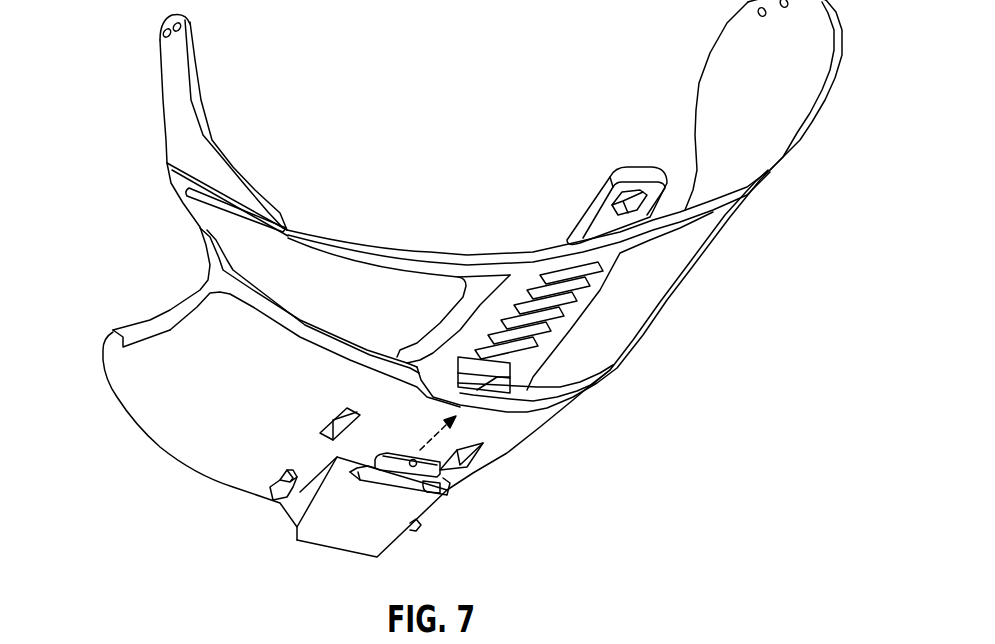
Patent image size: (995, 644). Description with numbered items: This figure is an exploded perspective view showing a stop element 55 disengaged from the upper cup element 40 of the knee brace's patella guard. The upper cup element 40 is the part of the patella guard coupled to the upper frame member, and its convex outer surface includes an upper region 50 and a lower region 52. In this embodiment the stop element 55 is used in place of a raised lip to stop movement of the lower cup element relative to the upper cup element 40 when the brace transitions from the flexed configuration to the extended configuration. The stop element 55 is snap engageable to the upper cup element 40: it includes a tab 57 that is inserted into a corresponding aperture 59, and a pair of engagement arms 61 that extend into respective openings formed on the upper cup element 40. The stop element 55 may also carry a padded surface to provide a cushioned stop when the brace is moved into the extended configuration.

The upper cup element 40 is at (457, 302).
The upper region 50 is at (506, 217).
The lower region 52 is at (160, 428).
The stop element 55 is at (350, 538).
The tab 57 is at (397, 455).
The aperture 59 is at (540, 380).
The engagement arms 61 is at (280, 472).